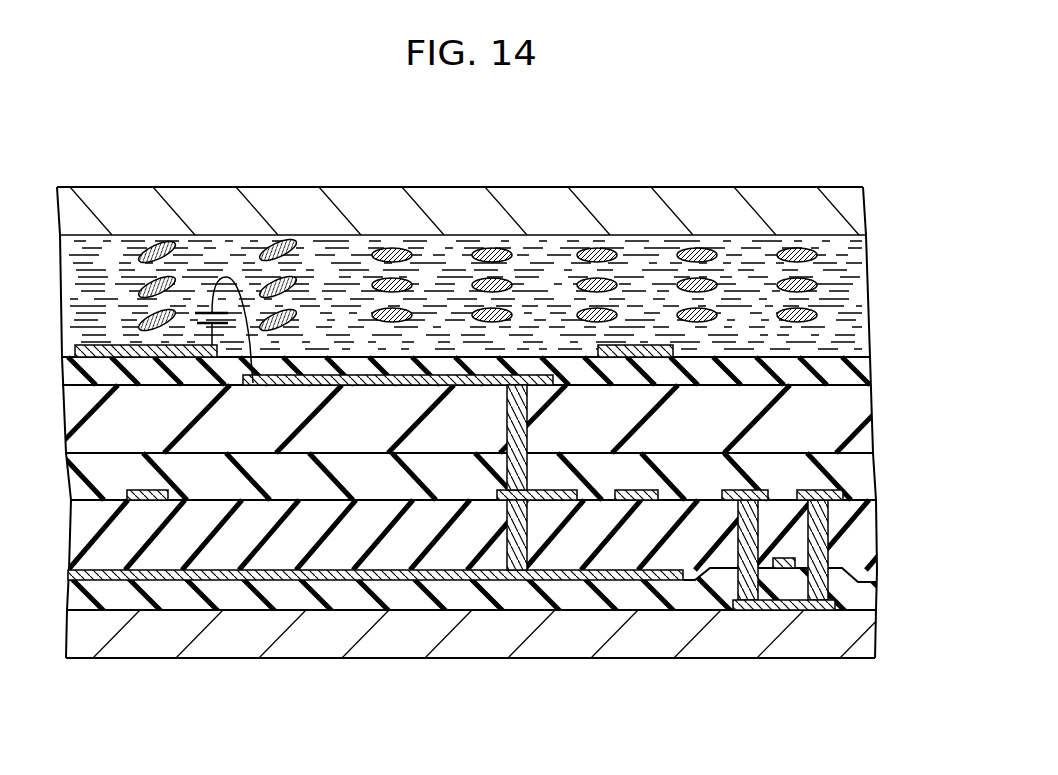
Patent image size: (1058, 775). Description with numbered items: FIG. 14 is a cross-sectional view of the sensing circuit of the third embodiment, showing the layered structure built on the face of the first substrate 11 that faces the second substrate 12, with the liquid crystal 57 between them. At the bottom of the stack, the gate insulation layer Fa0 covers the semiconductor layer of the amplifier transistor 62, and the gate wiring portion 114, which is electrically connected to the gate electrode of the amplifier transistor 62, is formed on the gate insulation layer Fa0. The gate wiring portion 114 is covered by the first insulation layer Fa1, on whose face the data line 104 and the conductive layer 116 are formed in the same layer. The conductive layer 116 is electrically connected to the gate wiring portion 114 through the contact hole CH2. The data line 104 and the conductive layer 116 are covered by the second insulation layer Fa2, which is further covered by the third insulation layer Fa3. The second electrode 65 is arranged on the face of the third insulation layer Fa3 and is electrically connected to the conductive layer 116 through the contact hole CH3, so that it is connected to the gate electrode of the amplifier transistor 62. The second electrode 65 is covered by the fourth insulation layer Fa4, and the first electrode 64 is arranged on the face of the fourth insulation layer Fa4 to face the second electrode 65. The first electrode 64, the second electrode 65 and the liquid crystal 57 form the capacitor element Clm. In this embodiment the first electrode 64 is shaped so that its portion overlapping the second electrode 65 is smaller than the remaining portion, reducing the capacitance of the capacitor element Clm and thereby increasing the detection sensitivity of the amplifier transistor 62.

The second substrate 12 is at (860, 207).
The liquid crystal 57 is at (860, 272).
The first electrode 64 is at (132, 343).
The second electrode 65 is at (352, 383).
The capacitor element Clm is at (202, 290).
The fourth insulation layer Fa4 is at (860, 367).
The third insulation layer Fa3 is at (860, 399).
The second insulation layer Fa2 is at (860, 465).
The first insulation layer Fa1 is at (860, 522).
The gate insulation layer Fa0 is at (860, 582).
The first substrate 11 is at (860, 620).
The data line 104 is at (142, 489).
The conductive layer 116 is at (556, 489).
The contact hole CH3 is at (508, 420).
The contact hole CH2 is at (508, 515).
The gate wiring portion 114 is at (338, 581).
The amplifier transistor 62 is at (790, 628).